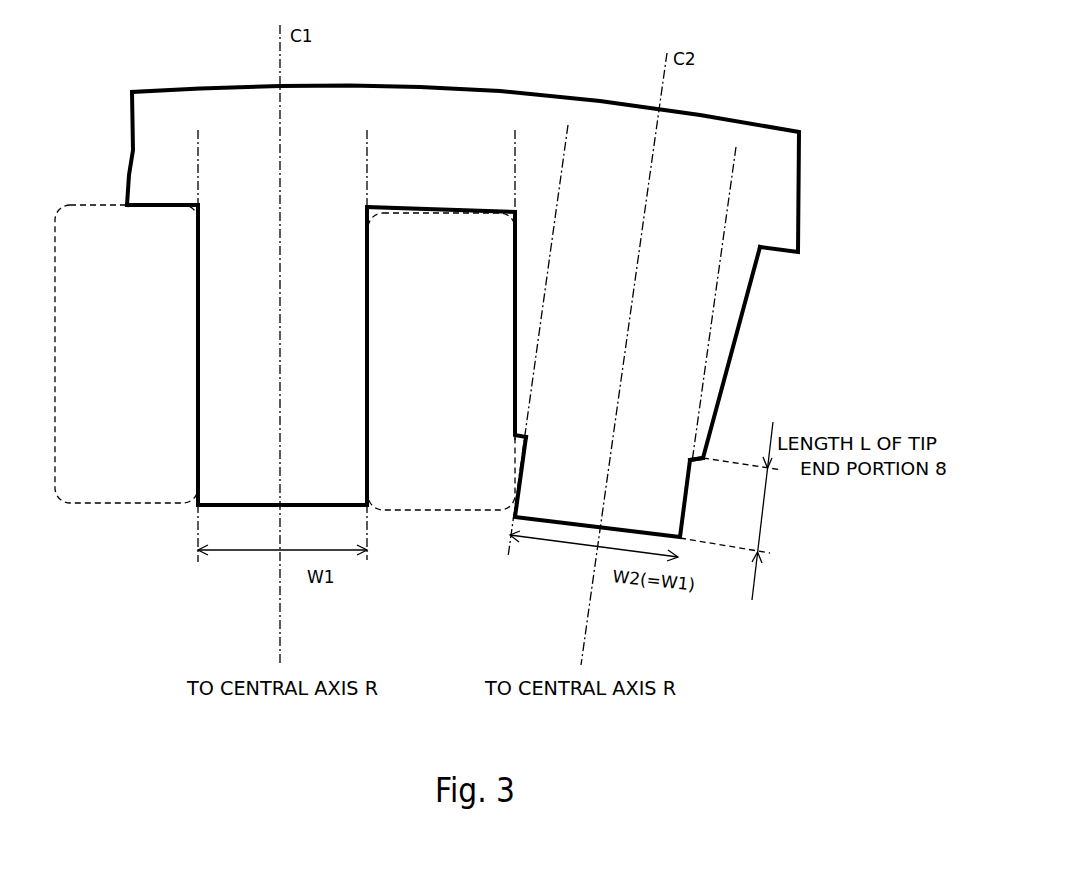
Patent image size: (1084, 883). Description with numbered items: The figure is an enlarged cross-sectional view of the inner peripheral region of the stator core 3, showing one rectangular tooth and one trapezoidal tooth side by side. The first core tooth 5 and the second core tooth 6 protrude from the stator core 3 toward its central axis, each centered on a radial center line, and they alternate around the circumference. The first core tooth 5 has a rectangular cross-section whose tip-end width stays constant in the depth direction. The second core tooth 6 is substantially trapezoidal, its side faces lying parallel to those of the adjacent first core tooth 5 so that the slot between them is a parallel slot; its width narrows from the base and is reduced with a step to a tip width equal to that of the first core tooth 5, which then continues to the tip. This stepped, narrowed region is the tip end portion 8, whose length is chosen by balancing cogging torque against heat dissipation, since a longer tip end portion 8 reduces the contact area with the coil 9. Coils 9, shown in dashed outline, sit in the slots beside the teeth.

The stator core 3 is at (485, 90).
The first core tooth 5 is at (198, 508).
The second core tooth 6 is at (663, 377).
The tip end portion 8 is at (712, 461).
The coil 9 is at (117, 504).